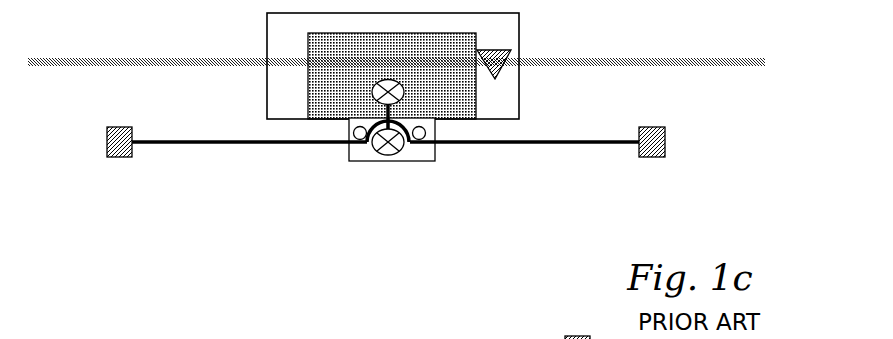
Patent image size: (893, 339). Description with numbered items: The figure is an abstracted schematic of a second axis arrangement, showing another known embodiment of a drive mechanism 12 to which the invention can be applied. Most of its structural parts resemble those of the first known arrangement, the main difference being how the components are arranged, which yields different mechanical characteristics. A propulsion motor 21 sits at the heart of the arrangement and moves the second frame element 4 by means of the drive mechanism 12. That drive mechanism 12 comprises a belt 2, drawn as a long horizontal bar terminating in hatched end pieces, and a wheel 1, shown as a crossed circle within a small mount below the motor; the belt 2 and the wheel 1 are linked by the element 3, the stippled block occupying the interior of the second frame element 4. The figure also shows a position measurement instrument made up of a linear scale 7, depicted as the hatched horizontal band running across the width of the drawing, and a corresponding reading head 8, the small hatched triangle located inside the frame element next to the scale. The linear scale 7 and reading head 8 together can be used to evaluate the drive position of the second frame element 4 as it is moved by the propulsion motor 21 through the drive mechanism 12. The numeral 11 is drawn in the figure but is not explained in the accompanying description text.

The wheel 1 is at (397, 155).
The belt 2 is at (276, 145).
The element 3 is at (318, 63).
The second frame element 4 is at (283, 41).
The linear scale 7 is at (530, 58).
The reading head 8 is at (495, 55).
The right end weight 11 is at (657, 133).
The drive mechanism 12 is at (137, 188).
The propulsion motor 21 is at (403, 91).